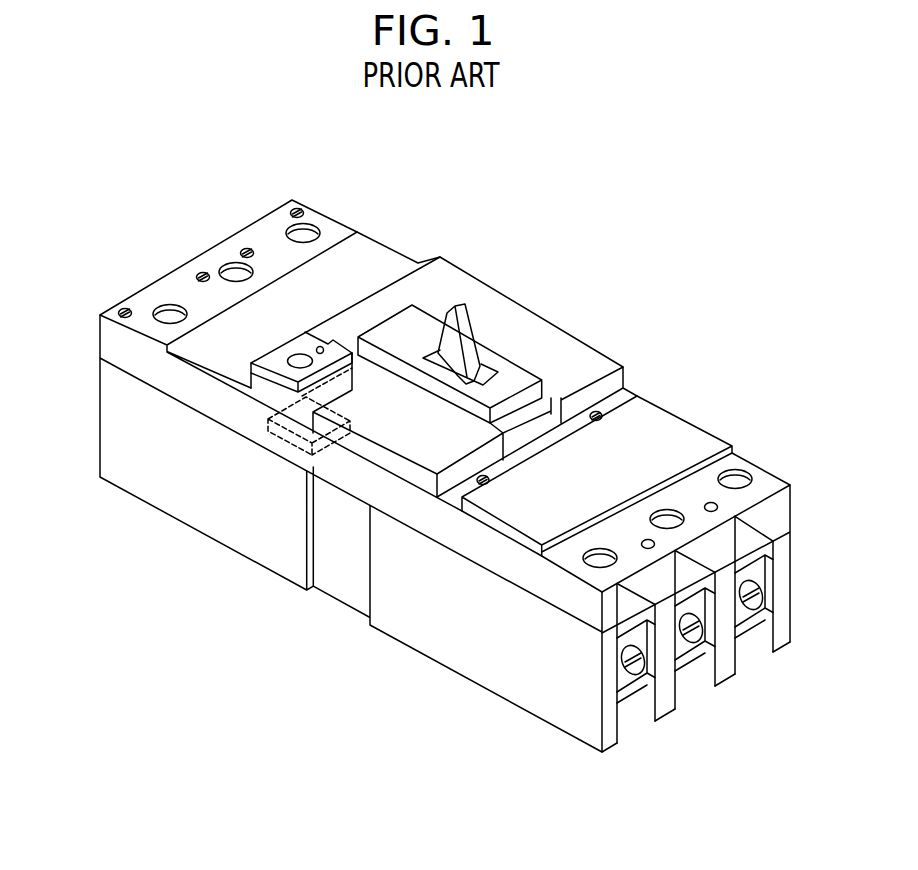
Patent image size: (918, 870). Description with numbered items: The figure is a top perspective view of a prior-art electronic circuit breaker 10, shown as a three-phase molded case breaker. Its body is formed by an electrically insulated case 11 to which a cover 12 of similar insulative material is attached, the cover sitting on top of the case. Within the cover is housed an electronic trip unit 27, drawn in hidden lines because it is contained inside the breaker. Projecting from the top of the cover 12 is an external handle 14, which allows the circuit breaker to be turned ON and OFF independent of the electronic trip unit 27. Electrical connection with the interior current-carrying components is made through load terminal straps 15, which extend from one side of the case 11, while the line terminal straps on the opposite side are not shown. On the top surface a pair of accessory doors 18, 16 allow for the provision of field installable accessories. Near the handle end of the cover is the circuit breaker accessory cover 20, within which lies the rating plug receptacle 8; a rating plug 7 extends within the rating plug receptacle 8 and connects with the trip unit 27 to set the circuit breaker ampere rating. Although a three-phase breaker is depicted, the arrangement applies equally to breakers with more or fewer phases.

The rating plug 7 is at (293, 352).
The rating plug receptacle 8 is at (335, 347).
The circuit breaker 10 is at (624, 843).
The case 11 is at (434, 662).
The cover 12 is at (467, 562).
The external handle 14 is at (462, 330).
The load terminal straps 15 is at (741, 628).
The accessory door 16 is at (560, 370).
The accessory door 18 is at (431, 438).
The circuit breaker accessory cover 20 is at (637, 394).
The electronic trip unit 27 is at (274, 440).